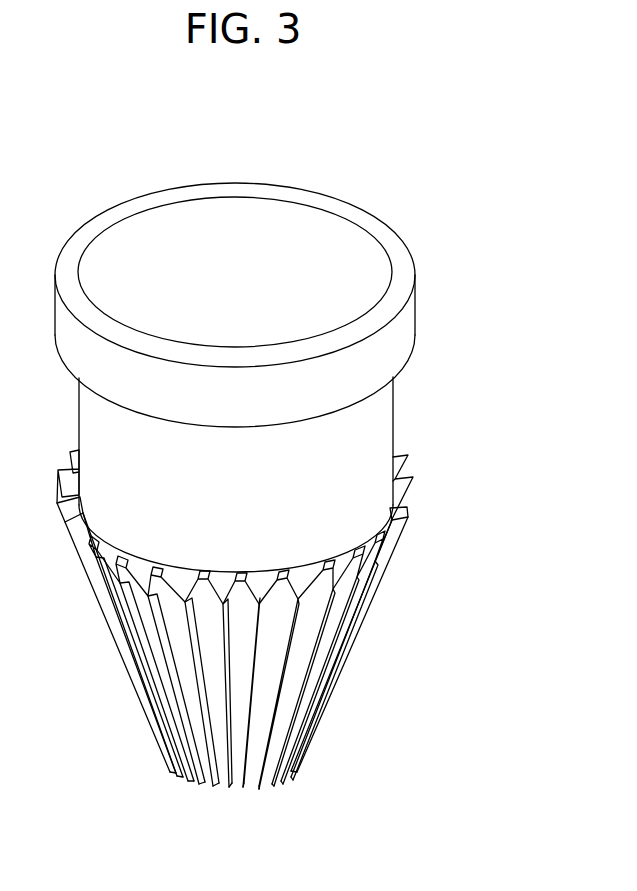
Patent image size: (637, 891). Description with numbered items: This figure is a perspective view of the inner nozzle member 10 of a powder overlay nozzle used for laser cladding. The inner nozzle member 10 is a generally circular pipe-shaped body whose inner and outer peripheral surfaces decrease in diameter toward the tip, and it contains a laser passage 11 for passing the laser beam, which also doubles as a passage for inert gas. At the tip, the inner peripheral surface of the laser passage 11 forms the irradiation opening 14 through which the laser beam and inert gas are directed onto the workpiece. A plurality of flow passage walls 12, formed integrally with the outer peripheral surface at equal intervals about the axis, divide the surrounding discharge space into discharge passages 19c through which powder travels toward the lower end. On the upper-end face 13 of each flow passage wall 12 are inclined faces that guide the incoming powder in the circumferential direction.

The inner nozzle member 10 is at (398, 197).
The laser passage 11 is at (222, 287).
The flow passage walls 12 is at (413, 474).
The upper-end face 13 is at (276, 565).
The irradiation opening 14 is at (281, 781).
The discharge passages 19c is at (392, 520).